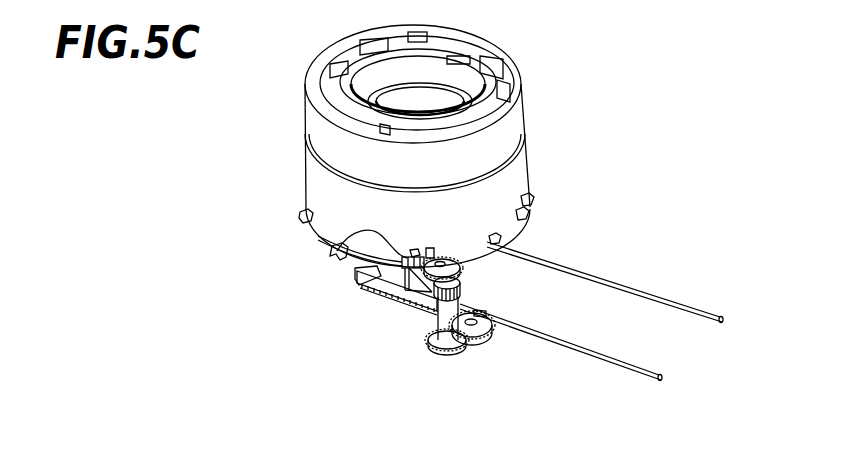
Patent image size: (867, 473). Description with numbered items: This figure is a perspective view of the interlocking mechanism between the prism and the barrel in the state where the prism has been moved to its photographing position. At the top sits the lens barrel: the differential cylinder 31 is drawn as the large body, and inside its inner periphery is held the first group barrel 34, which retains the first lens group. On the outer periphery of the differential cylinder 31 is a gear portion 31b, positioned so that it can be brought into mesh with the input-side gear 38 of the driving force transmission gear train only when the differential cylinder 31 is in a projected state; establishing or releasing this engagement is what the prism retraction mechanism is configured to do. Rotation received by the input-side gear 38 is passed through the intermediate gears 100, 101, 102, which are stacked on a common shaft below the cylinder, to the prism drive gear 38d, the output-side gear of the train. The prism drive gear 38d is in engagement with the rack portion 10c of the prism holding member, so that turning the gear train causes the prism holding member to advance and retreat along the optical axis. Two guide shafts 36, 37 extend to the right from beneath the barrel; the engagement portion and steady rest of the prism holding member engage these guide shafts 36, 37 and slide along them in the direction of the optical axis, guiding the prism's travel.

The differential cylinder 31 is at (318, 172).
The gear portion 31b is at (335, 243).
The first group barrel 34 is at (512, 124).
The rack portion 10c is at (367, 288).
The intermediate gear 100 is at (437, 303).
The intermediate gear 101 is at (433, 350).
The intermediate gear 102 is at (468, 348).
The input-side gear 38 is at (462, 266).
The prism drive gear 38d is at (476, 348).
The guide shaft 37 is at (698, 313).
The guide shaft 36 is at (647, 380).